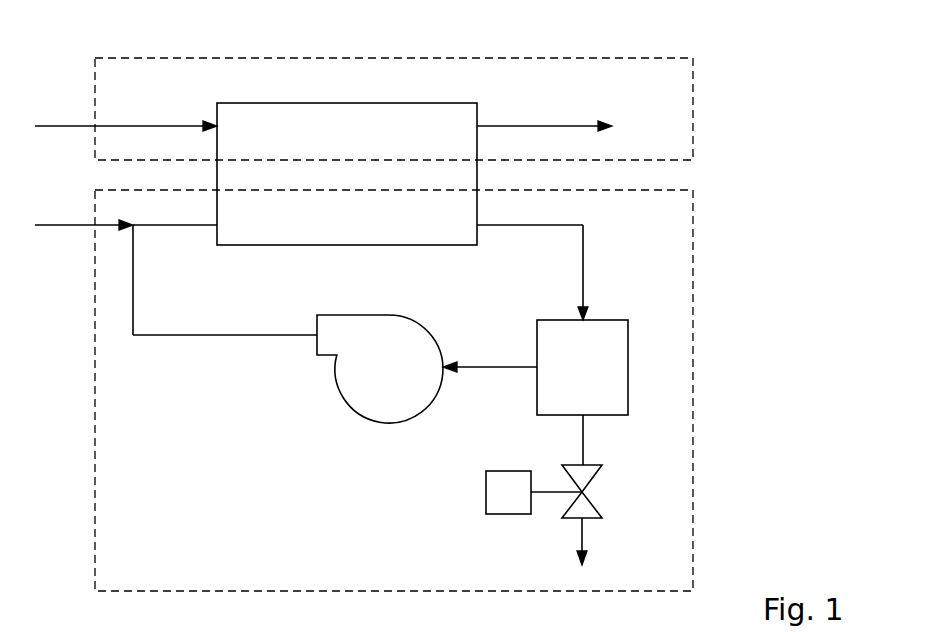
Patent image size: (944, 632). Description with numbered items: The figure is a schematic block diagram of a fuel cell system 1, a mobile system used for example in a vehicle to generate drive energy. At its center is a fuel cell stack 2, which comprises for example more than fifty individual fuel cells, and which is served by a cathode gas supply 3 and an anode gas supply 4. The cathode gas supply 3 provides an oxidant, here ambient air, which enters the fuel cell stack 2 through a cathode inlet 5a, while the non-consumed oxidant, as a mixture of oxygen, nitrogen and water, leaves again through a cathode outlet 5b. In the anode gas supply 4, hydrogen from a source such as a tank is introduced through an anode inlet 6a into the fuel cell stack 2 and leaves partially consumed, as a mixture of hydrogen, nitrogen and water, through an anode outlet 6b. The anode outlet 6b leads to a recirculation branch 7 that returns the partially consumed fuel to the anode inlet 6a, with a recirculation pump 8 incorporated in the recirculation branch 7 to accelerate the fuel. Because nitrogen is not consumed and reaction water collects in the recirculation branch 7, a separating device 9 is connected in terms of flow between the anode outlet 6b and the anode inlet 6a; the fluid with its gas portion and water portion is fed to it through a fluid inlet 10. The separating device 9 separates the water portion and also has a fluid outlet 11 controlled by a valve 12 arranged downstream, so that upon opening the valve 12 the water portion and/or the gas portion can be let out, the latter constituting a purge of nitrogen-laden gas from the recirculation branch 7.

The fuel cell system 1 is at (756, 135).
The fuel cell stack 2 is at (340, 230).
The cathode gas supply 3 is at (664, 142).
The anode gas supply 4 is at (664, 574).
The cathode inlet 5a is at (216, 121).
The cathode outlet 5b is at (480, 121).
The anode inlet 6a is at (215, 247).
The anode outlet 6b is at (479, 228).
The recirculation branch 7 is at (585, 277).
The recirculation pump 8 is at (379, 379).
The separating device 9 is at (575, 379).
The fluid inlet 10 is at (579, 314).
The fluid outlet 11 is at (585, 418).
The valve 12 is at (586, 492).